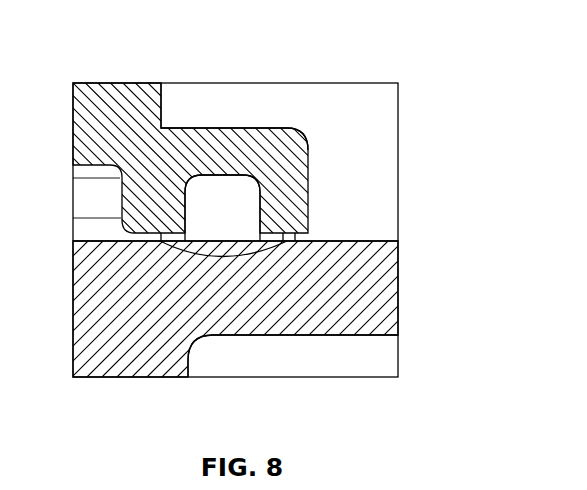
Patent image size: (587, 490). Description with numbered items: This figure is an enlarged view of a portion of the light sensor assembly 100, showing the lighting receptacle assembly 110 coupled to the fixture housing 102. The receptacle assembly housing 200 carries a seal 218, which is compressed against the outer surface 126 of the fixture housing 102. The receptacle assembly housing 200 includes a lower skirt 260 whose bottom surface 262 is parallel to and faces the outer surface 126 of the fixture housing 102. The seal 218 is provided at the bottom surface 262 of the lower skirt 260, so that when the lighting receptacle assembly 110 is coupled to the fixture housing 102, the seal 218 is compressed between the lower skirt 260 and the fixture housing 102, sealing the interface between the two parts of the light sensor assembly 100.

The light sensor assembly 100 is at (367, 104).
The fixture housing 102 is at (334, 344).
The lighting receptacle assembly 110 is at (200, 112).
The outer surface 126 is at (367, 241).
The receptacle assembly housing 200 is at (155, 103).
The seal 218 is at (217, 222).
The lower skirt 260 is at (287, 142).
The bottom surface 262 is at (297, 243).